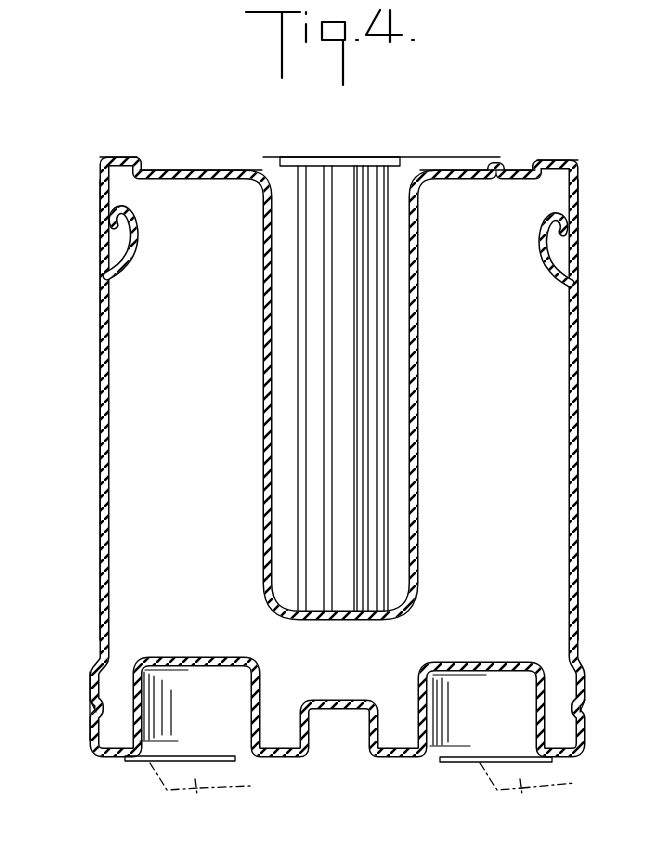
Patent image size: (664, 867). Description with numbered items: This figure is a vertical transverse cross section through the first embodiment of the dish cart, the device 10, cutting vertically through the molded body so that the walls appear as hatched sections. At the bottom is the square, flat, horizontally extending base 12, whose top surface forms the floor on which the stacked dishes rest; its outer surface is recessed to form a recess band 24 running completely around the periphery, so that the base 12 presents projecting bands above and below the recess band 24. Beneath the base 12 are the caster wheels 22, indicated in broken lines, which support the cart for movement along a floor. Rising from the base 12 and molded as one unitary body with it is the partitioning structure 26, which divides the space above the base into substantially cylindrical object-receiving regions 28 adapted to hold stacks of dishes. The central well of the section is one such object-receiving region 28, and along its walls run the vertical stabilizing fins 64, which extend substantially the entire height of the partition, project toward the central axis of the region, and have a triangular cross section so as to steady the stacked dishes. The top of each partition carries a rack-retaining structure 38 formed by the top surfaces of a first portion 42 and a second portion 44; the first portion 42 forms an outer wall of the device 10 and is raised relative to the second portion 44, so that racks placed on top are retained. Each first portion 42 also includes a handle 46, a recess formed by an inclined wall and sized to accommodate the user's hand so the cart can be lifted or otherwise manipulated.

The device 10 is at (547, 138).
The base 12 is at (84, 688).
The caster wheel 22 is at (363, 777).
The recess band 24 is at (88, 710).
The partitioning structure 26 is at (92, 556).
The object-receiving region 28 is at (288, 157).
The rack-retaining structure 38 is at (131, 148).
The first portion 42 is at (580, 405).
The second portion 44 is at (166, 162).
The handle 46 is at (120, 237).
The stabilizing fin 64 is at (297, 267).